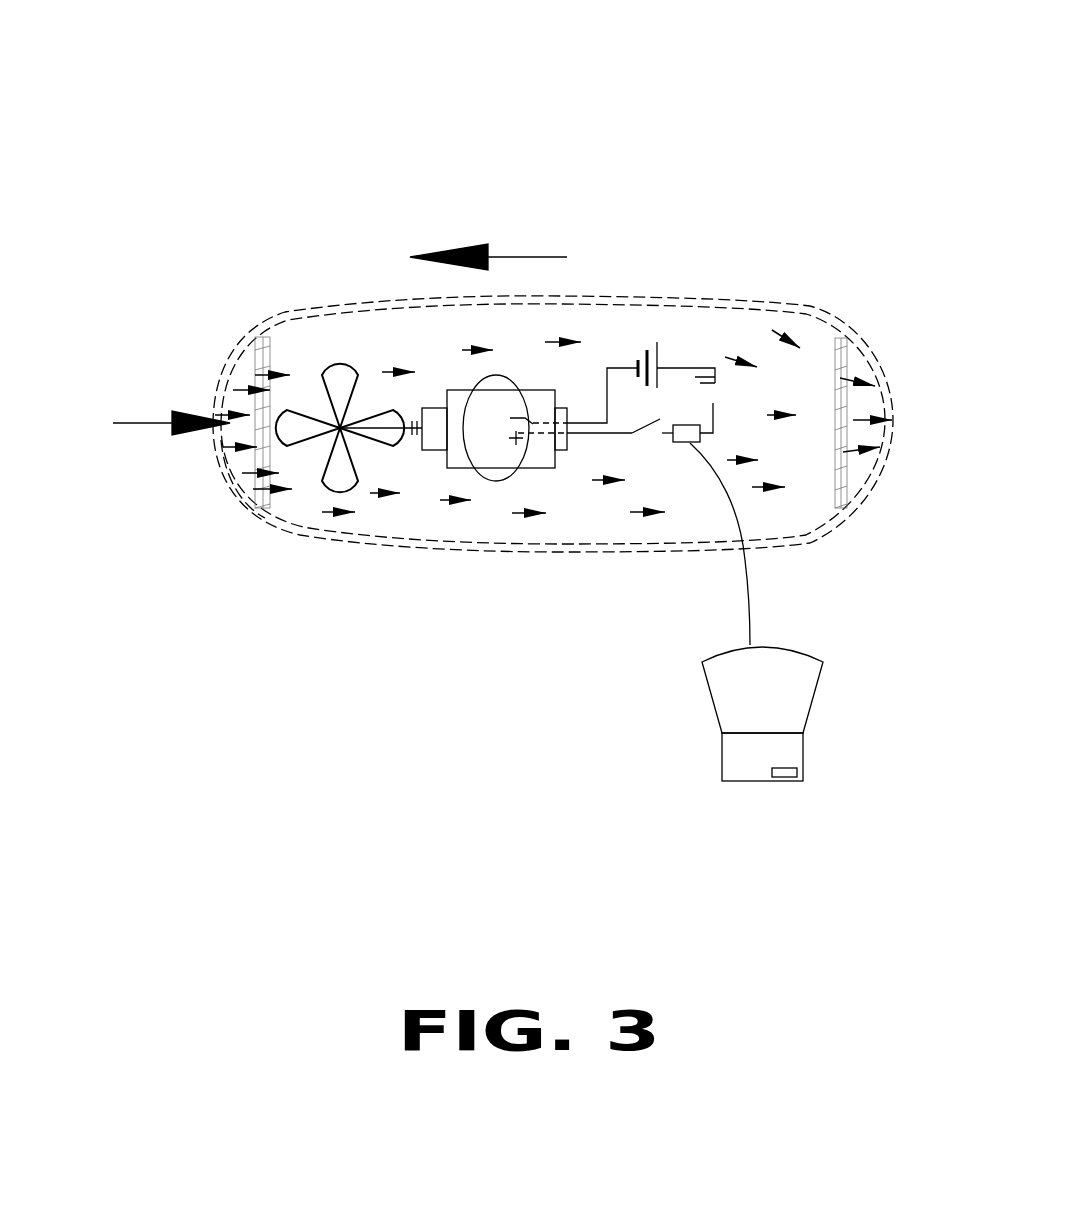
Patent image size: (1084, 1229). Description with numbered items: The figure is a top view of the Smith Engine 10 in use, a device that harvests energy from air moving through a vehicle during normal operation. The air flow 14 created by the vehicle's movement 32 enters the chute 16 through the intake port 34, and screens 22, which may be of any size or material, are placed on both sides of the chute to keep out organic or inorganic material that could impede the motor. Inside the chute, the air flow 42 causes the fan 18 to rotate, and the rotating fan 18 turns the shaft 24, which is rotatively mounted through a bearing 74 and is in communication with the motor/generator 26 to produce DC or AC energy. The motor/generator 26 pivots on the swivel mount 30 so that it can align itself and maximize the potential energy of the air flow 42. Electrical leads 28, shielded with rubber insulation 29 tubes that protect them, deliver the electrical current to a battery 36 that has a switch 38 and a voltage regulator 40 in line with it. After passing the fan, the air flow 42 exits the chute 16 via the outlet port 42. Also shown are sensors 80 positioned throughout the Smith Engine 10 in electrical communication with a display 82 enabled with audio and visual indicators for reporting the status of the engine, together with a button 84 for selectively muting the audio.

The Smith Engine 10 is at (767, 107).
The air flow 14 is at (135, 423).
The chute 16 is at (400, 340).
The fan 18 is at (337, 475).
The screens 22 is at (268, 496).
The shaft 24 is at (413, 436).
The motor/generator 26 is at (497, 460).
The electrical leads 28 is at (602, 426).
The rubber insulation tubes 29 is at (568, 425).
The swivel mount 30 is at (592, 436).
The vehicle's movement 32 is at (515, 256).
The intake port 34 is at (228, 462).
The battery 36 is at (655, 343).
The switch 38 is at (677, 442).
The voltage regulator 40 is at (707, 365).
The air flow / outlet port 42 is at (270, 392).
The bearing 74 is at (420, 440).
The sensors 80 is at (687, 425).
The display 82 is at (707, 693).
The button 84 is at (787, 775).